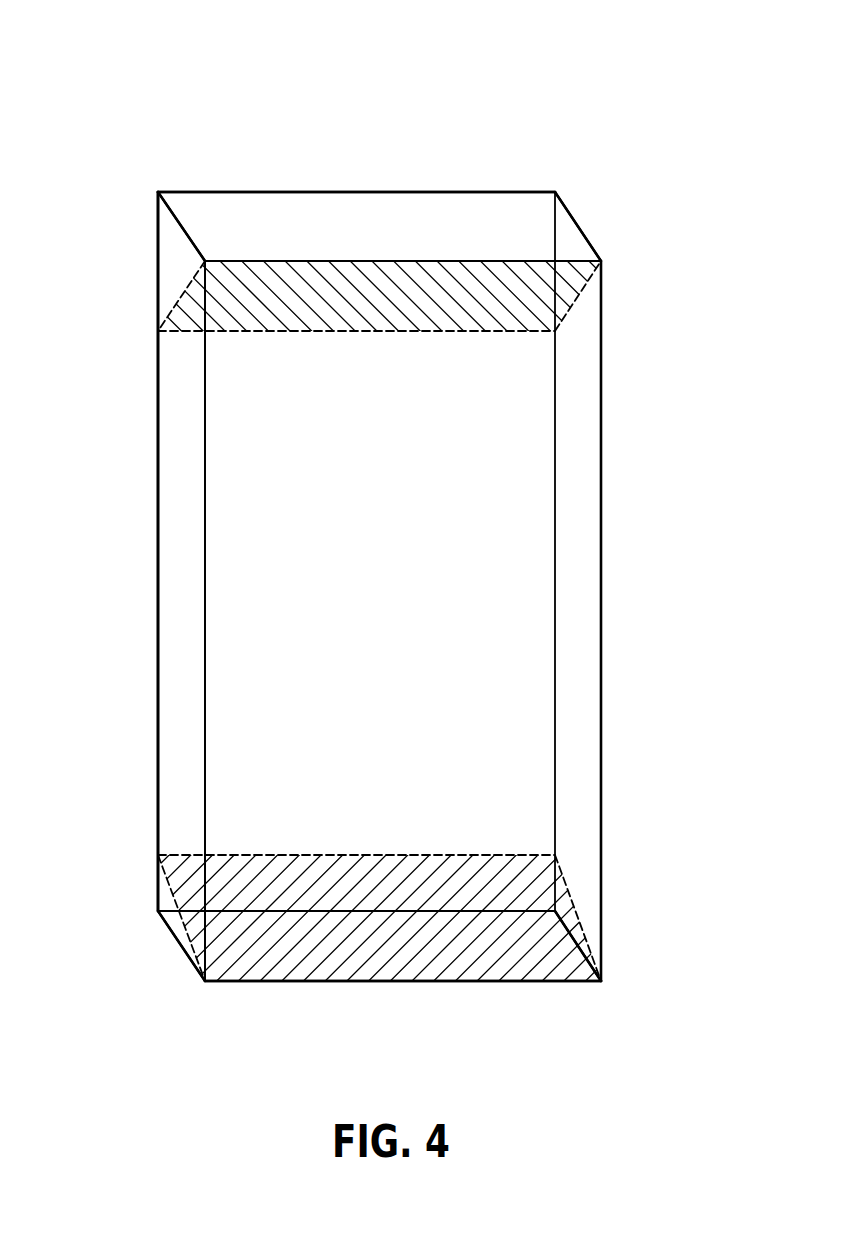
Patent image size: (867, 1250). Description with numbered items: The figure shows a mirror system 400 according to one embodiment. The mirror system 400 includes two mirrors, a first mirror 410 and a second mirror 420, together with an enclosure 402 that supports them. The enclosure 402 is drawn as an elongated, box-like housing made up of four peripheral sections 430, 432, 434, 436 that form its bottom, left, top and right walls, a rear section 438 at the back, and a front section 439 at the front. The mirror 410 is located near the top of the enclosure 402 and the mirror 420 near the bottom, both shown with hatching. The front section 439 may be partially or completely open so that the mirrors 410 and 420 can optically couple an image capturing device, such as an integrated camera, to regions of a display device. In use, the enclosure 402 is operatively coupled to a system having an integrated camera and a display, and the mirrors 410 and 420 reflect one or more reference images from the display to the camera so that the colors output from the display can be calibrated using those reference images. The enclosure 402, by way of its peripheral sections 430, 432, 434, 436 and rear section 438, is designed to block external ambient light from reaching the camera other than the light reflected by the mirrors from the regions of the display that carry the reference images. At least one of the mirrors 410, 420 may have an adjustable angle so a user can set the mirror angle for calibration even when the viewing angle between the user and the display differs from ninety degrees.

The mirror system 400 is at (444, 54).
The enclosure 402 is at (443, 192).
The mirror 410 is at (533, 283).
The mirror 420 is at (392, 950).
The peripheral section 430 is at (177, 929).
The peripheral section 432 is at (182, 663).
The peripheral section 434 is at (295, 218).
The peripheral section 436 is at (580, 620).
The rear section 438 is at (147, 455).
The front section 439 is at (193, 560).